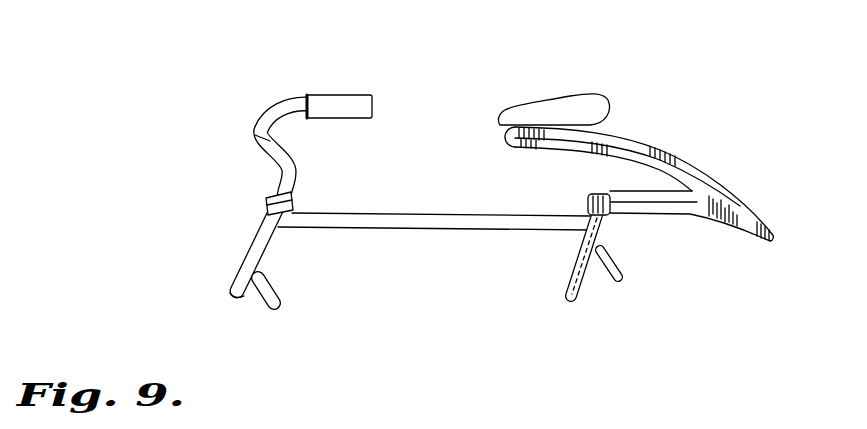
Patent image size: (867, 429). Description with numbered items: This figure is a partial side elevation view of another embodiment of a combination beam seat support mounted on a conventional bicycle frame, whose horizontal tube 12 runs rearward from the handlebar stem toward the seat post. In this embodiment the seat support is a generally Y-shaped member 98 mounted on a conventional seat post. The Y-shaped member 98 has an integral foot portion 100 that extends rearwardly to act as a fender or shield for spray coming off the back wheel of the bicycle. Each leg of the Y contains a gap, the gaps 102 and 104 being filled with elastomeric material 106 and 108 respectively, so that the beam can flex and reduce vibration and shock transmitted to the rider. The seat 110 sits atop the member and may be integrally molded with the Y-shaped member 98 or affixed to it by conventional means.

The horizontal tube 12 is at (319, 221).
The generally Y-shaped member 98 is at (598, 187).
The integral foot portion 100 is at (727, 226).
The gap 102 is at (513, 138).
The gap 104 is at (587, 201).
The elastomeric material 106 is at (623, 136).
The elastomeric material 108 is at (603, 194).
The seat 110 is at (600, 103).